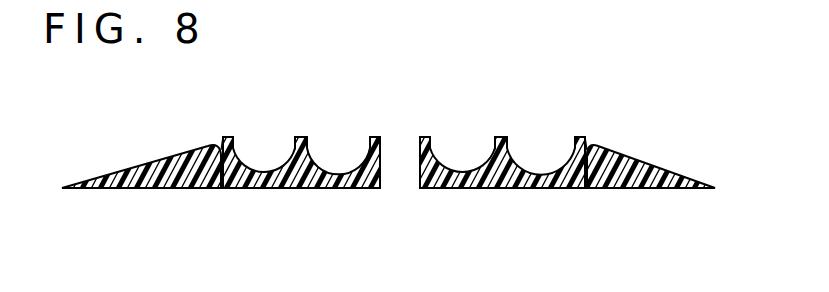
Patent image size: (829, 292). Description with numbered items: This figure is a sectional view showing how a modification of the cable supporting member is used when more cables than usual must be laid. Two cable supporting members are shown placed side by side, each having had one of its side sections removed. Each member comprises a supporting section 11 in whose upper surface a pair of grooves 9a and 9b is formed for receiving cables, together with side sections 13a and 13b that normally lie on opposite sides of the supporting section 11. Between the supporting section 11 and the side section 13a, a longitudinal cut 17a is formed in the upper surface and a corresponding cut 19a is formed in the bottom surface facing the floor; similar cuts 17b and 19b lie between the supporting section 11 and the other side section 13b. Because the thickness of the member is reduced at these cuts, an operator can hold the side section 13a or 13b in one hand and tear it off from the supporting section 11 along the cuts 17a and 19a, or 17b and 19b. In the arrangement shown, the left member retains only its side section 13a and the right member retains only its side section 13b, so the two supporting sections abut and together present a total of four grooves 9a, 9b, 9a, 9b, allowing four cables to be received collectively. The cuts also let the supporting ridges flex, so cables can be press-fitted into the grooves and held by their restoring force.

The groove 9a is at (237, 152).
The groove 9b is at (309, 151).
The supporting section 11 is at (300, 188).
The side section 13a is at (165, 172).
The side section 13b is at (650, 188).
The longitudinal cut 17a is at (222, 136).
The longitudinal cut 17b is at (586, 136).
The longitudinal cut 19a is at (226, 188).
The longitudinal cut 19b is at (585, 188).